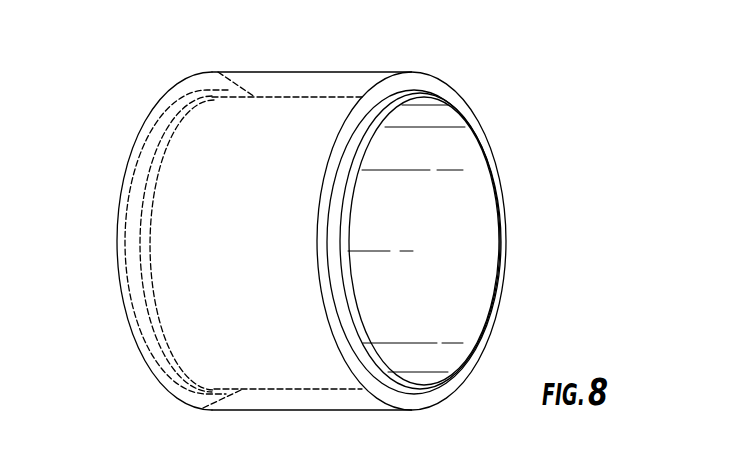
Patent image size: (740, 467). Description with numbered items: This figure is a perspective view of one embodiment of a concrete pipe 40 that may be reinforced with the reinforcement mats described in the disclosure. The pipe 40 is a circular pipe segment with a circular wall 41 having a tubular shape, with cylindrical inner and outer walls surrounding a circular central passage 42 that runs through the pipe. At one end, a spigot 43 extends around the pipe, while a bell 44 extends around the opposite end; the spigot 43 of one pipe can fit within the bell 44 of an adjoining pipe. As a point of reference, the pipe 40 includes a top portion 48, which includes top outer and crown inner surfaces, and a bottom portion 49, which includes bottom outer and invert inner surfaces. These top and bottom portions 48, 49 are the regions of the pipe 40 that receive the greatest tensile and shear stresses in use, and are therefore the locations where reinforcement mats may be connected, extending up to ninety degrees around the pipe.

The concrete pipe 40 is at (162, 86).
The circular wall 41 is at (375, 72).
The circular central passage 42 is at (468, 239).
The spigot 43 is at (493, 146).
The bell 44 is at (128, 150).
The top portion 48 is at (247, 70).
The bottom portion 49 is at (240, 412).